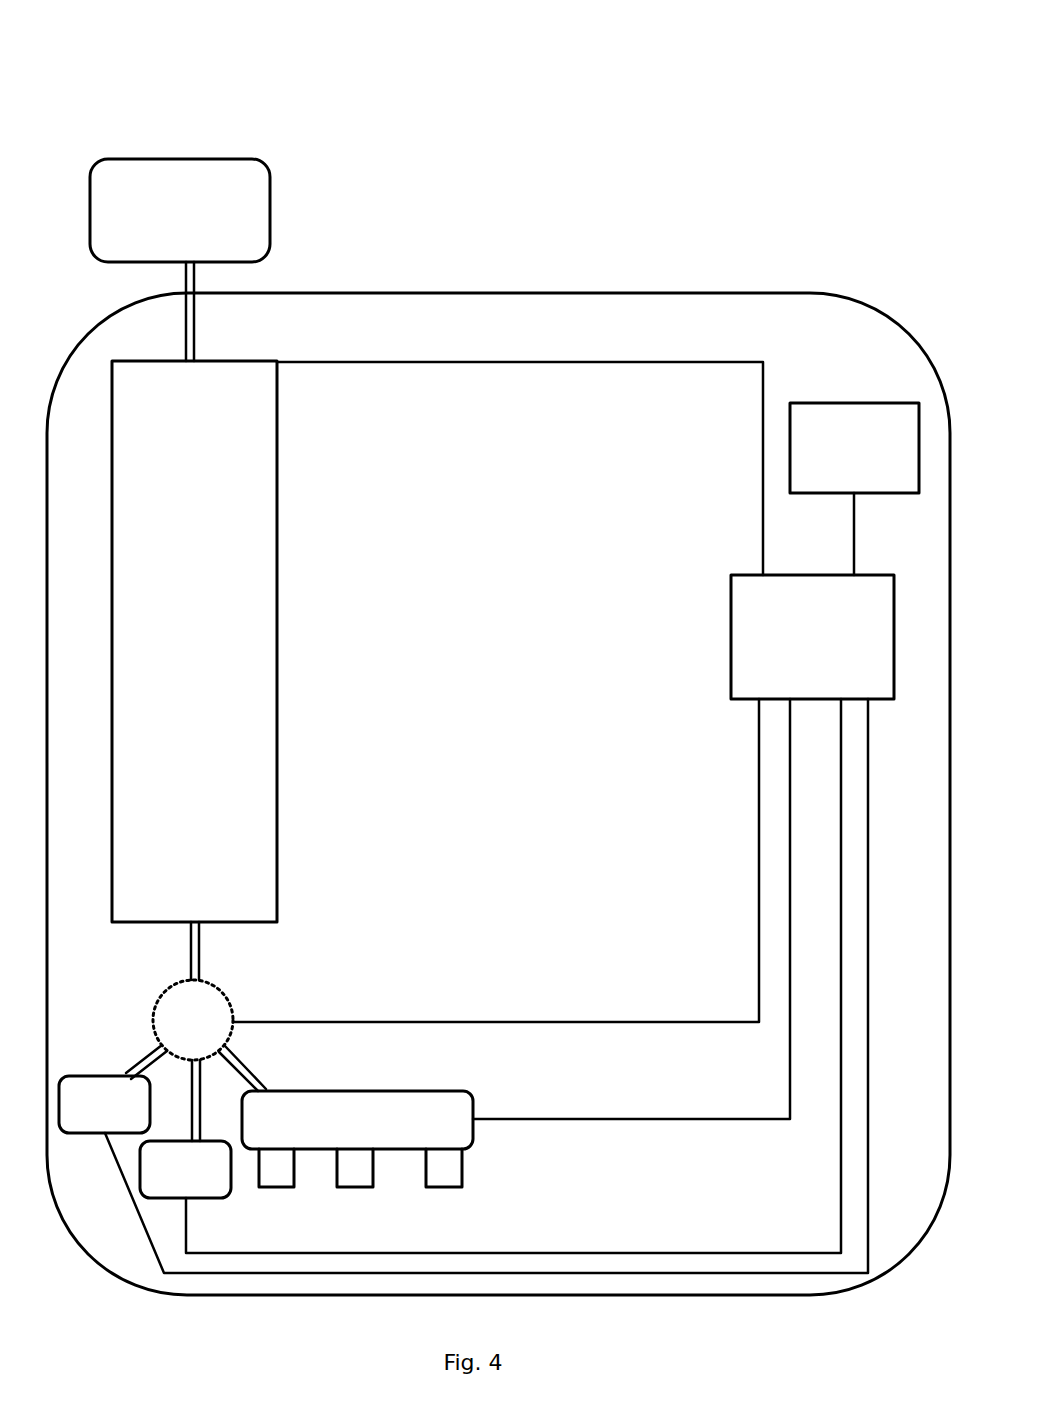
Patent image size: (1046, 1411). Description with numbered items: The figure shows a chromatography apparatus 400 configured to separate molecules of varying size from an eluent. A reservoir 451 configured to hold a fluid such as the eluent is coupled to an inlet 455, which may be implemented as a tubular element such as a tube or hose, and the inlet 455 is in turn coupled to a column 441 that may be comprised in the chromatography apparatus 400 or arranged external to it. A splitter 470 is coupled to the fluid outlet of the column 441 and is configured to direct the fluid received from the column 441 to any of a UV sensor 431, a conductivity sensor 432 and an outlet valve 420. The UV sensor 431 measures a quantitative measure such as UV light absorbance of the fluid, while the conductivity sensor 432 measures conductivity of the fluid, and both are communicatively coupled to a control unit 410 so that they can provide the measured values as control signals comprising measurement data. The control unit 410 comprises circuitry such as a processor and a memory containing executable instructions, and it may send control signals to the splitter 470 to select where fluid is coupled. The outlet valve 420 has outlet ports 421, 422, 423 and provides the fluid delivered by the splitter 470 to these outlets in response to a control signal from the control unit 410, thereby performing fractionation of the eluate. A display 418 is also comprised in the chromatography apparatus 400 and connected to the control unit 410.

The chromatography apparatus 400 is at (498, 90).
The control unit 410 is at (499, 817).
The display 418 is at (854, 489).
The outlet valve 420 is at (357, 1120).
The outlet port 421 is at (276, 1185).
The outlet port 422 is at (354, 1185).
The outlet port 423 is at (443, 1185).
The UV sensor 431 is at (104, 1104).
The conductivity sensor 432 is at (185, 1169).
The column 441 is at (194, 641).
The reservoir 451 is at (180, 210).
The inlet 455 is at (196, 321).
The splitter 470 is at (172, 993).